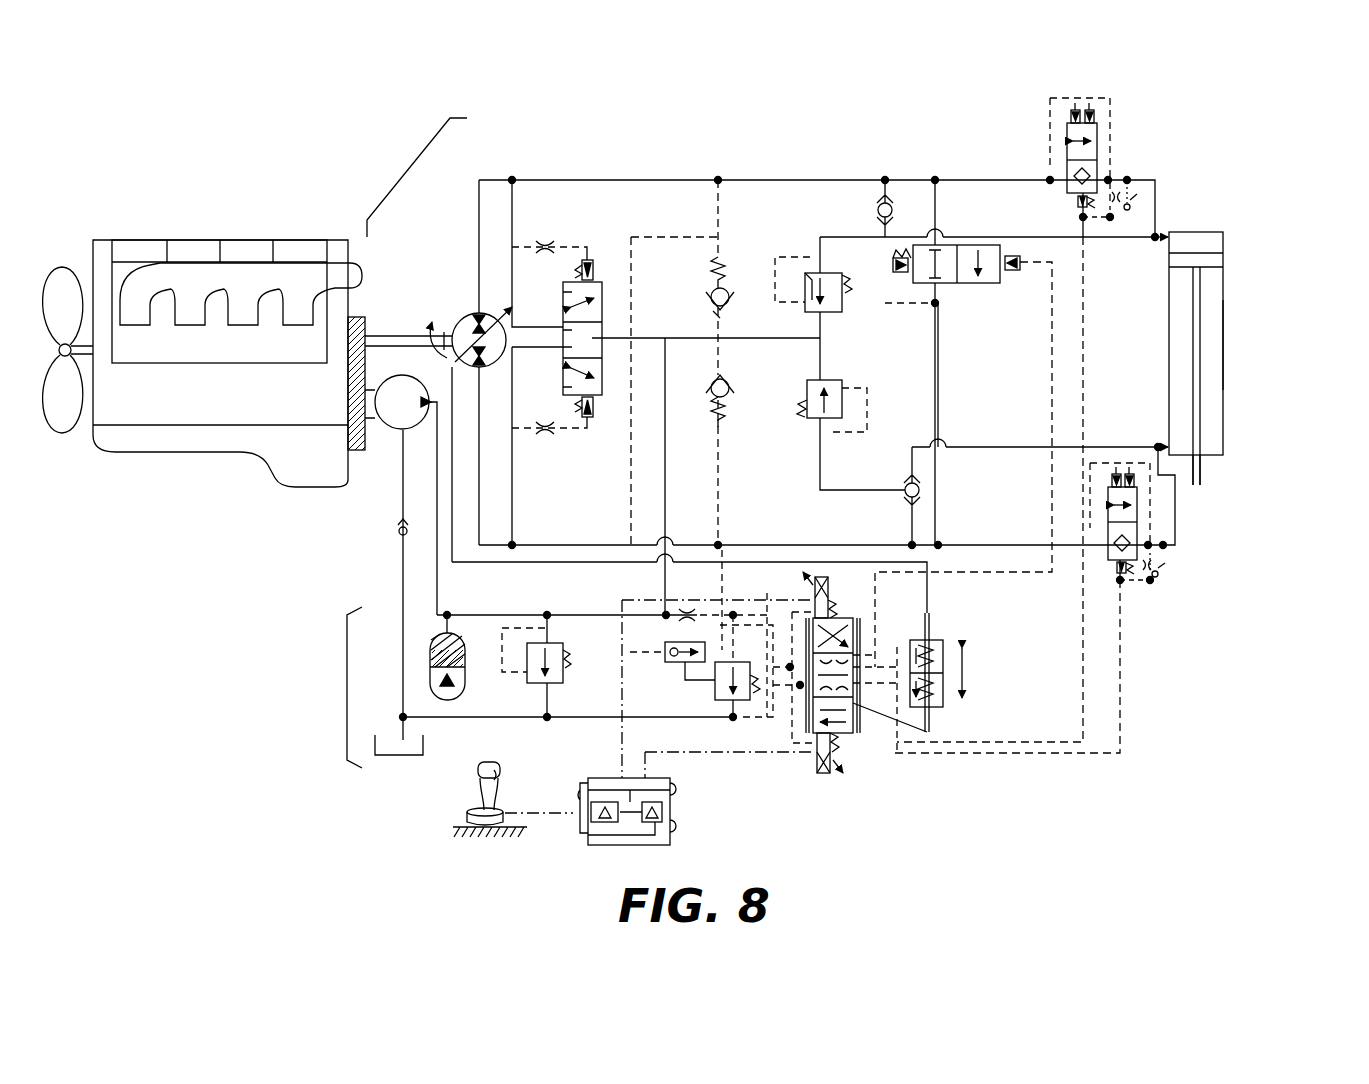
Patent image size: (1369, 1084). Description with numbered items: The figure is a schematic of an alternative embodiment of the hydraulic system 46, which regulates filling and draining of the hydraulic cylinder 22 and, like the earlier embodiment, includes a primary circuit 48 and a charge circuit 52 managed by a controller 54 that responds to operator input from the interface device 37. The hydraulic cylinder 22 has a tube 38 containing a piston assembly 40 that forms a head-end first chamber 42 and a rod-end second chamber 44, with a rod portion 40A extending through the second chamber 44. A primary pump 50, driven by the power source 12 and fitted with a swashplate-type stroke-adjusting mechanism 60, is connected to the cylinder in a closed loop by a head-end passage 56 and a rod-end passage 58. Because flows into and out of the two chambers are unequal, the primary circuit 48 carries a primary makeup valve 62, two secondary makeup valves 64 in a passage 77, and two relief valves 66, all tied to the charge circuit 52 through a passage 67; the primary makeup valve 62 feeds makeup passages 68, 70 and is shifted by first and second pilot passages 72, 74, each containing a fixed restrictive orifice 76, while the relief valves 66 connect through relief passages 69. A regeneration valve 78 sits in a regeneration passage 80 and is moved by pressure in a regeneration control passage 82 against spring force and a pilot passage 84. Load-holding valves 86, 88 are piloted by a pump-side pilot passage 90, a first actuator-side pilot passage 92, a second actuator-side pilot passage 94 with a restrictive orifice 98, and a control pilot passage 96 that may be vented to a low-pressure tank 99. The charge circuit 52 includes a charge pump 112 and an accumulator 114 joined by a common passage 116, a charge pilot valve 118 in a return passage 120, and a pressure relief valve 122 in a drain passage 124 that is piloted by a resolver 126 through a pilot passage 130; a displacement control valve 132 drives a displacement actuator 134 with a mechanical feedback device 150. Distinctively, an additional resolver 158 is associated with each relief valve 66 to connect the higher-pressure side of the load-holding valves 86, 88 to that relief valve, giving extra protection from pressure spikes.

The power source 12 is at (240, 407).
The hydraulic cylinder 22 is at (1308, 224).
The interface device 37 is at (478, 800).
The tube 38 is at (1225, 343).
The piston assembly 40 is at (1212, 258).
The rod portion 40A is at (1200, 468).
The first chamber 42 is at (1200, 242).
The second chamber 44 is at (1215, 398).
The hydraulic system 46 is at (298, 553).
The primary circuit 48 is at (408, 172).
The primary pump 50 is at (468, 315).
The charge circuit 52 is at (347, 690).
The controller 54 is at (680, 813).
The head-end passage 56 is at (570, 180).
The rod-end passage 58 is at (565, 545).
The stroke-adjusting mechanism 60 is at (452, 372).
The primary makeup valve 62 is at (600, 262).
The secondary makeup valve 64 is at (703, 298).
The relief valve 66 is at (840, 310).
The passage 67 is at (667, 482).
The makeup passage 68 is at (514, 226).
The relief passage 69 is at (952, 237).
The makeup passage 70 is at (514, 522).
The first pilot passage 72 is at (584, 256).
The second pilot passage 74 is at (584, 430).
The fixed restrictive orifice 76 is at (545, 254).
The passage 77 is at (721, 309).
The regeneration valve 78 is at (982, 283).
The regeneration passage 80 is at (938, 385).
The regeneration control passage 82 is at (1050, 418).
The pilot passage 84 is at (882, 300).
The load-holding valve 86 is at (1073, 198).
The load-holding valve 88 is at (1112, 572).
The pump-side pilot passage 90 is at (1050, 165).
The first actuator-side pilot passage 92 is at (1110, 140).
The second actuator-side pilot passage 94 is at (1128, 215).
The control pilot passage 96 is at (1083, 338).
The restrictive orifice 98 is at (1115, 210).
The low-pressure tank 99 is at (424, 754).
The charge pump 112 is at (384, 412).
The accumulator 114 is at (430, 655).
The common passage 116 is at (462, 614).
The charge pilot valve 118 is at (558, 645).
The return passage 120 is at (565, 720).
The pressure relief valve 122 is at (715, 690).
The drain passage 124 is at (767, 608).
The resolver 126 is at (672, 664).
The pilot passage 130 is at (732, 560).
The displacement control valve 132 is at (852, 768).
The displacement actuator 134 is at (957, 634).
The mechanical feedback device 150 is at (908, 727).
The resolver 158 is at (877, 210).